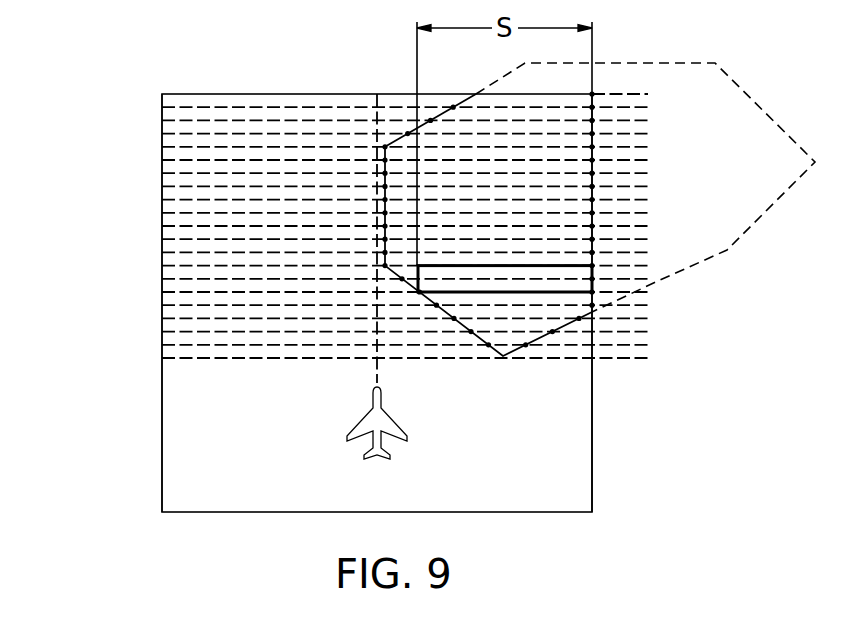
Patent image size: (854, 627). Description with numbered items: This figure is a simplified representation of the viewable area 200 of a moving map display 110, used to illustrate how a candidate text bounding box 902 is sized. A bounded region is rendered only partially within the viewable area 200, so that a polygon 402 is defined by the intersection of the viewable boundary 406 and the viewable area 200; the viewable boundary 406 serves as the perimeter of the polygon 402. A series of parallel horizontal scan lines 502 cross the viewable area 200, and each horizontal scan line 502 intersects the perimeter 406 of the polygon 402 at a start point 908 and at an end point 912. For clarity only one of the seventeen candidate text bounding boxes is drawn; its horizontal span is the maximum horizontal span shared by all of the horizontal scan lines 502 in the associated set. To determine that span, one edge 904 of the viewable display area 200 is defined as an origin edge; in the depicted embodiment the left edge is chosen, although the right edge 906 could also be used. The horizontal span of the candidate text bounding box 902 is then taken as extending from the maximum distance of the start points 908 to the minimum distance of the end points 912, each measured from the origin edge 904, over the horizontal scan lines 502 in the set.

The moving map display 110 is at (141, 108).
The viewable area 200 is at (218, 118).
The horizontal scan line 502 is at (338, 104).
The viewable boundary 406 is at (444, 110).
The origin edge 904 is at (162, 312).
The right edge 906 is at (592, 418).
The start point 908 is at (418, 292).
The end point 912 is at (592, 266).
The candidate text bounding box 902 is at (517, 293).
The polygon 402 is at (457, 340).